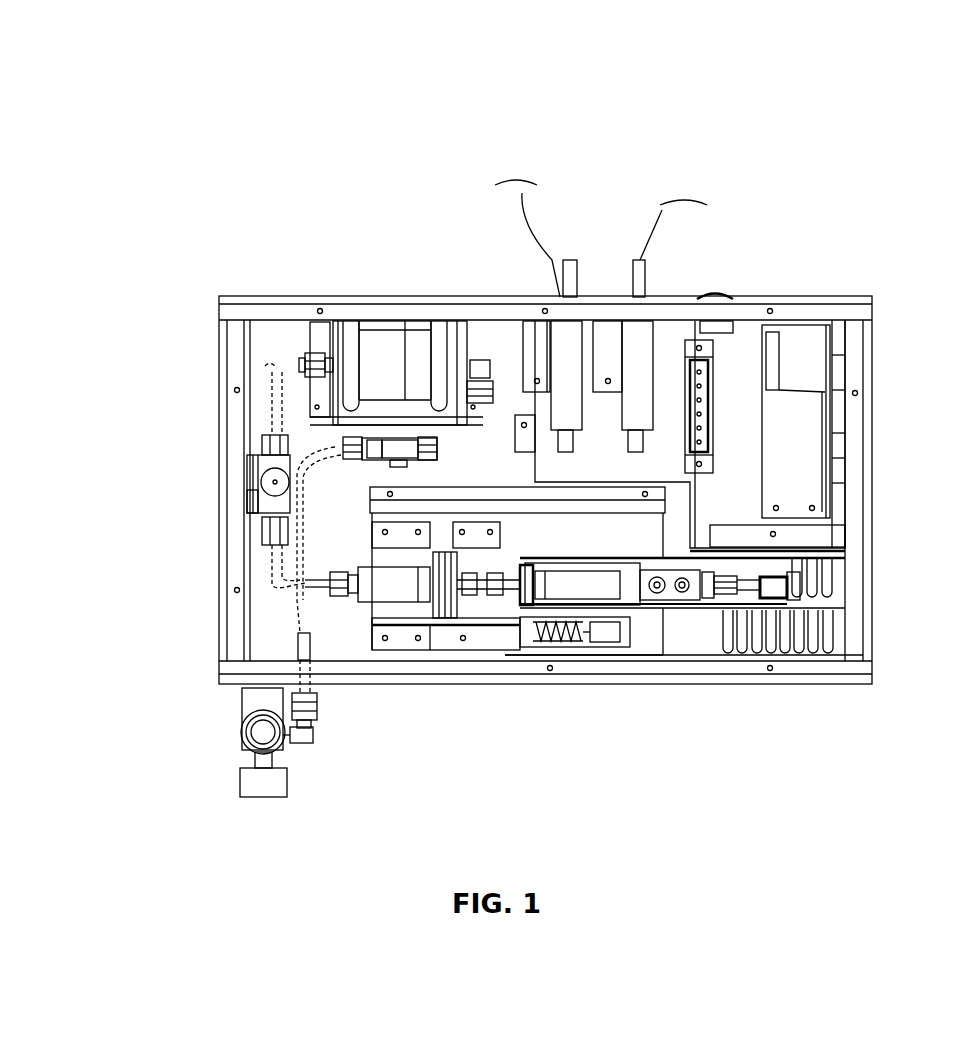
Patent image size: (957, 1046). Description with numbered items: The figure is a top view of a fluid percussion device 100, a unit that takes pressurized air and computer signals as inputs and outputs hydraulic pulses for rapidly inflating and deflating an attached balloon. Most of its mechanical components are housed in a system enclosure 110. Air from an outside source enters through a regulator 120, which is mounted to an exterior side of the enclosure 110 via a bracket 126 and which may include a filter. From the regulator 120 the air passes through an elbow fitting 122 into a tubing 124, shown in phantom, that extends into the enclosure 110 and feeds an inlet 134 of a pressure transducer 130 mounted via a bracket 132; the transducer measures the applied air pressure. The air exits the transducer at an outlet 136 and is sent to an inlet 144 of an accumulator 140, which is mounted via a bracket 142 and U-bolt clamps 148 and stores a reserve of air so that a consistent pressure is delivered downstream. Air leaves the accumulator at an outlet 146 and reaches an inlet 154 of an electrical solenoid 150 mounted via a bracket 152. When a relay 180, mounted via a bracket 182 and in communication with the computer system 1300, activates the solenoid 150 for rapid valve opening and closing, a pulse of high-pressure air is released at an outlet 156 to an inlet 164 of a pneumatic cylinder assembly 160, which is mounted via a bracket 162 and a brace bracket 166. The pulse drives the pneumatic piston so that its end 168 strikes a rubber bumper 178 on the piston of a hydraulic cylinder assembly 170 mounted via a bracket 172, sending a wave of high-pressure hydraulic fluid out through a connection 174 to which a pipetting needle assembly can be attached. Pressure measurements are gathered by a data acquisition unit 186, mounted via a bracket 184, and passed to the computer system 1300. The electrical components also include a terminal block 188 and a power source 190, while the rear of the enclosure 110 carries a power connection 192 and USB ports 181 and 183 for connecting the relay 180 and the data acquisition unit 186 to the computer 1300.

The fluid percussion device 100 is at (158, 152).
The system enclosure 110 is at (221, 583).
The regulator 120 is at (247, 755).
The elbow fitting 122 is at (307, 737).
The tubing 124 is at (320, 663).
The bracket 126 is at (240, 707).
The pressure transducer 130 is at (253, 463).
The bracket 132 is at (260, 515).
The inlet 134 is at (262, 537).
The outlet of pressure transducer 136 is at (262, 437).
The accumulator 140 is at (383, 322).
The bracket 142 is at (410, 413).
The inlet 144 is at (306, 349).
The outlet of accumulator 146 is at (473, 347).
The U-bolt clamps 148 is at (347, 345).
The electrical solenoid 150 is at (343, 440).
The bracket 152 is at (312, 355).
The inlet 154 is at (437, 462).
The outlet of solenoid 156 is at (387, 428).
The pneumatic cylinder assembly 160 is at (370, 602).
The bracket 162 is at (438, 625).
The inlet 164 is at (303, 580).
The brace bracket 166 is at (460, 655).
The end of pneumatic piston 168 is at (477, 600).
The hydraulic cylinder assembly 170 is at (653, 660).
The bracket 172 is at (607, 660).
The connection 174 is at (810, 607).
The rubber bumper 178 is at (540, 660).
The relay 180 is at (580, 338).
The USB port 181 is at (533, 238).
The bracket 182 is at (543, 340).
The USB port 183 is at (672, 248).
The bracket 184 is at (597, 342).
The data acquisition unit 186 is at (652, 330).
The terminal block 188 is at (715, 377).
The power source 190 is at (807, 397).
The power connection 192 is at (717, 297).
The computer system 1300 is at (687, 200).